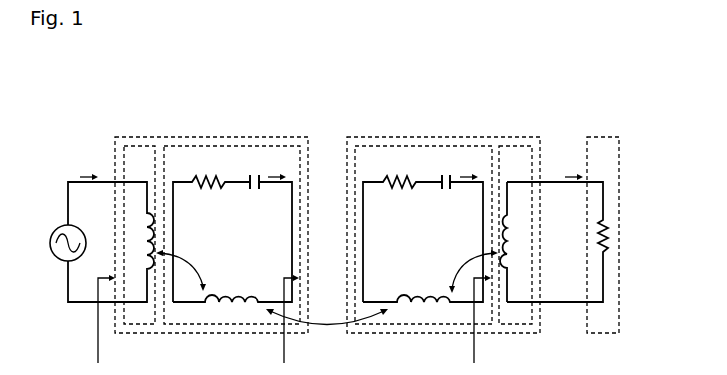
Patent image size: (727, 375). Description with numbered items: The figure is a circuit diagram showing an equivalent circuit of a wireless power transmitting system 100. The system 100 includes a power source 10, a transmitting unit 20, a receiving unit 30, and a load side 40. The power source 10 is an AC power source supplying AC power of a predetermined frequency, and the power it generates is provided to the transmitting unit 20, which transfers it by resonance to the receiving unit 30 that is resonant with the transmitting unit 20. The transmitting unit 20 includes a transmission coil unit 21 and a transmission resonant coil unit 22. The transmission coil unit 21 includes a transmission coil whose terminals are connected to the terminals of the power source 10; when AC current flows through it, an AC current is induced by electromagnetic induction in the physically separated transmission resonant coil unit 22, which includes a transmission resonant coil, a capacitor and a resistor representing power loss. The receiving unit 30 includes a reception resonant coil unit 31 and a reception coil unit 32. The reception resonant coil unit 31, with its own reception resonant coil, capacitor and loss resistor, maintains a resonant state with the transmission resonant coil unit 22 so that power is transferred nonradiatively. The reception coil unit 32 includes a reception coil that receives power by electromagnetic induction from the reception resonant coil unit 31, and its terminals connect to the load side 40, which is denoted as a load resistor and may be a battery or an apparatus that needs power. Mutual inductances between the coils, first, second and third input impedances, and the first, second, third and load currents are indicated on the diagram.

The wireless power transmitting system 100 is at (96, 52).
The power source 10 is at (57, 229).
The transmitting unit 20 is at (203, 136).
The transmission coil unit 21 is at (145, 146).
The transmission resonant coil unit 22 is at (250, 146).
The receiving unit 30 is at (433, 136).
The reception resonant coil unit 31 is at (388, 146).
The reception coil unit 32 is at (514, 146).
The load side 40 is at (600, 137).